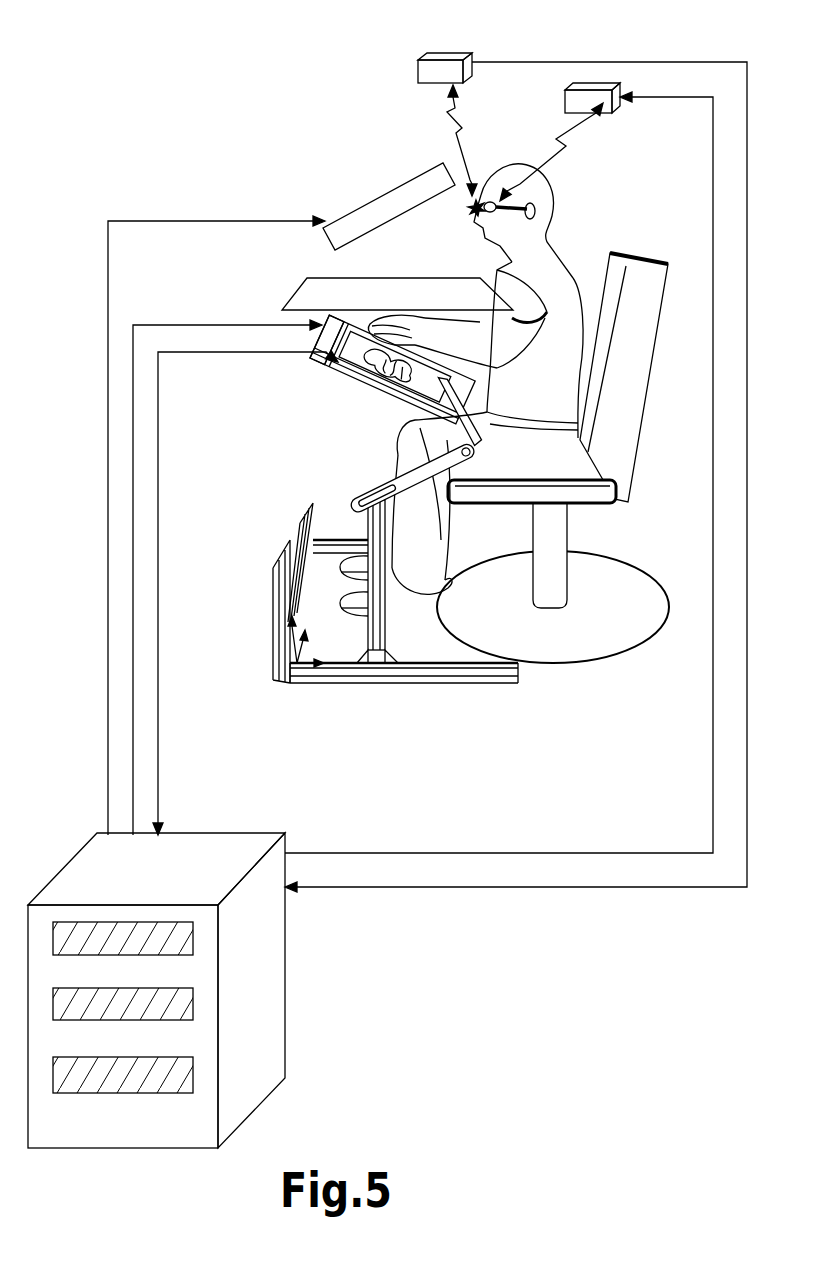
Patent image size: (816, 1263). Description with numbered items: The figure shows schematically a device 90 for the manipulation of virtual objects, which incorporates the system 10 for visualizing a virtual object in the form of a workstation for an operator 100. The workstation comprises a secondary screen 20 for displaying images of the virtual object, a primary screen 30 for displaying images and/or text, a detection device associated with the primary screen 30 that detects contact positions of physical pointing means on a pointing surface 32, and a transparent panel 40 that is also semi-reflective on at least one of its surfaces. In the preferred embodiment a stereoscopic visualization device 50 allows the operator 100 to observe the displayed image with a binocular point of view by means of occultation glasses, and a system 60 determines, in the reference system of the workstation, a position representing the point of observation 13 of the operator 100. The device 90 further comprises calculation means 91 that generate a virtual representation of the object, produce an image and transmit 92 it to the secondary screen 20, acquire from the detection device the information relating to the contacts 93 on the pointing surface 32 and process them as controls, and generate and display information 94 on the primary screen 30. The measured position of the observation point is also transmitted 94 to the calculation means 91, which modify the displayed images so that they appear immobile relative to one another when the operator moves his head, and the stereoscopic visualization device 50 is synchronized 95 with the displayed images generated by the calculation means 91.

The system 10 is at (381, 712).
The point of observation 13 is at (474, 209).
The secondary screen 20 is at (413, 187).
The primary screen 30 is at (328, 365).
The pointing surface 32 is at (327, 347).
The transparent panel 40 is at (300, 293).
The stereoscopic visualization device 50 is at (593, 83).
The system for determining a position 60 is at (418, 68).
The device for the manipulation of virtual objects 90 is at (480, 1029).
The calculation means 91 is at (220, 1025).
The transmission of image 92 is at (108, 530).
The contacts 93 is at (158, 598).
The information 94 is at (133, 500).
The synchronization 95 is at (503, 853).
The operator 100 is at (612, 257).